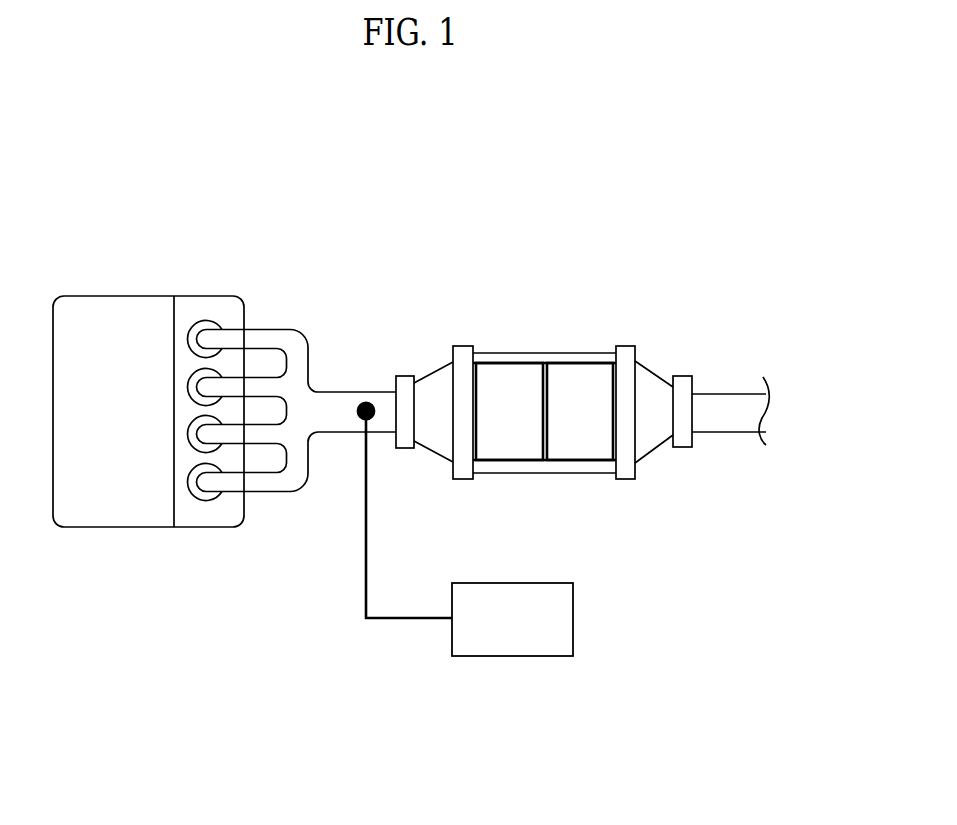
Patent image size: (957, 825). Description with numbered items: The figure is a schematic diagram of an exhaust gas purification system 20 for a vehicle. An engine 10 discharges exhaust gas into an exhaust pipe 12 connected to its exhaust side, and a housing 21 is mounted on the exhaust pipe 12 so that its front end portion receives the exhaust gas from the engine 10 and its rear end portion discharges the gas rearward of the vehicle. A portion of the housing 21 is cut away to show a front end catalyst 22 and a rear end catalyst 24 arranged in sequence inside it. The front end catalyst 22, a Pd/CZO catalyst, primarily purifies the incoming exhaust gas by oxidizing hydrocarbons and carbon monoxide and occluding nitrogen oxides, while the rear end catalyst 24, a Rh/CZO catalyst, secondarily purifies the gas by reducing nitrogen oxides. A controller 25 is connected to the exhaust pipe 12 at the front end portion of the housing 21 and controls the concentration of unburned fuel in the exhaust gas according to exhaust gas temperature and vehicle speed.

The engine 10 is at (114, 296).
The exhaust pipe 12 is at (345, 391).
The exhaust gas purification system 20 is at (582, 378).
The housing 21 is at (430, 368).
The front end catalyst 22 is at (507, 362).
The rear end catalyst 24 is at (578, 362).
The controller 25 is at (513, 583).